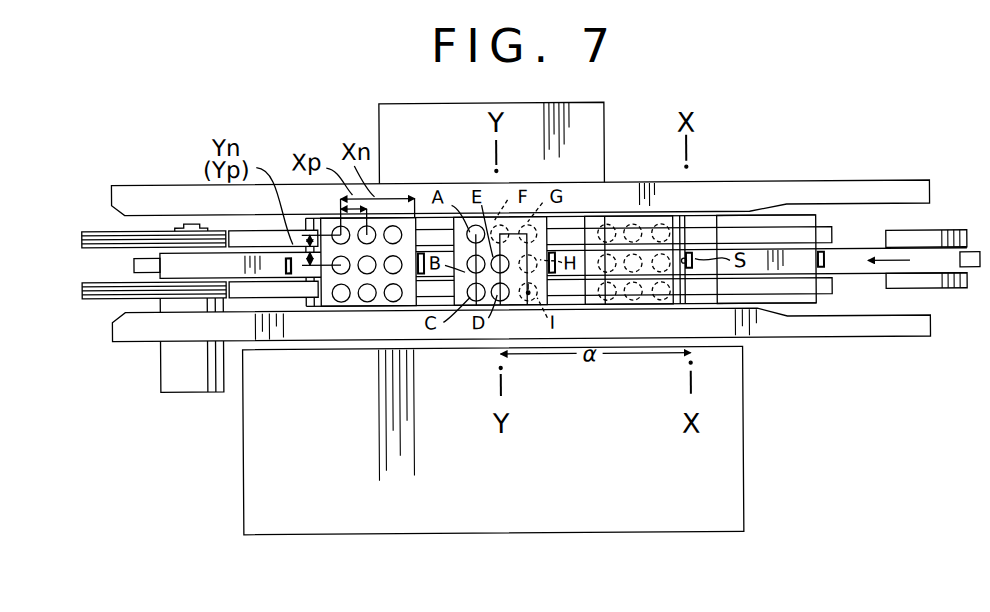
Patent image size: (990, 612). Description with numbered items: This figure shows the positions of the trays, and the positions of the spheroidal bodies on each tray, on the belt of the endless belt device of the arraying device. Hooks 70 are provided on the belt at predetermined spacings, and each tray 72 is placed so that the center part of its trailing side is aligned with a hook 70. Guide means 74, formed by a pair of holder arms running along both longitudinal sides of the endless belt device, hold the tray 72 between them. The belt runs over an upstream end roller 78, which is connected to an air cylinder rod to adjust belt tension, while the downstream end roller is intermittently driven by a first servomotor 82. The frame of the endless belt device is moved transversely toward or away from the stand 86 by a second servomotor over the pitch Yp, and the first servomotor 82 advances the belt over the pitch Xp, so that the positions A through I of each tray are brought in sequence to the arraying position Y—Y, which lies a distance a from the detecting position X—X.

The hook 70 is at (826, 258).
The tray 72 is at (803, 219).
The guide means 74 is at (907, 200).
The upstream end roller 78 is at (933, 286).
The first servomotor 82 is at (185, 373).
The stand 86 is at (728, 502).